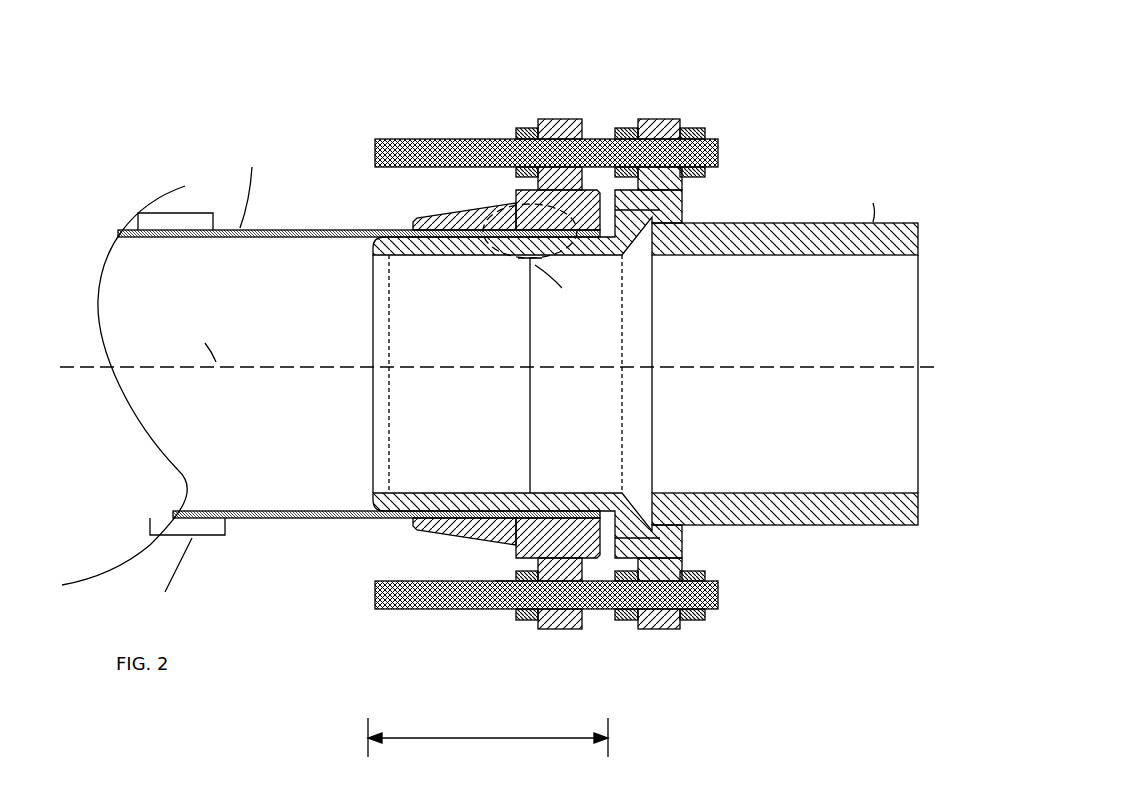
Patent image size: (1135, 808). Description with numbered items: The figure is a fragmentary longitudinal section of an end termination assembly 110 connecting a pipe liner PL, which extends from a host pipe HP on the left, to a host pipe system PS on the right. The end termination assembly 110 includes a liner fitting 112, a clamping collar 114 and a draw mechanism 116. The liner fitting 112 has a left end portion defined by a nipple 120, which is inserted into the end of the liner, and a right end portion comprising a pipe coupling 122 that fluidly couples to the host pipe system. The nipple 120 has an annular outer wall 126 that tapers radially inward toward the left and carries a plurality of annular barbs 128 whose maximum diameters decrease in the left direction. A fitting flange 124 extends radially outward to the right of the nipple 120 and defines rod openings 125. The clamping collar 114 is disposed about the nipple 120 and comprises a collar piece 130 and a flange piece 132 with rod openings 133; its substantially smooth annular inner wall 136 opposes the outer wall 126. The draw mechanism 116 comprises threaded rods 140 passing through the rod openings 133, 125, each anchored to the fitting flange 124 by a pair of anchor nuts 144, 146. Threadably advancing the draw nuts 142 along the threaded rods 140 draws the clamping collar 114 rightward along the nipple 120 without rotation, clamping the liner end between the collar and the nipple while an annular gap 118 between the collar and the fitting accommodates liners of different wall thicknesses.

The end termination assembly 110 is at (497, 396).
The liner fitting 112 is at (598, 402).
The clamping collar 114 is at (400, 214).
The draw mechanism 116 is at (512, 378).
The annular gap 118 is at (503, 585).
The nipple 120 is at (373, 500).
The pipe coupling 122 is at (665, 225).
The fitting flange 124 is at (668, 118).
The rod opening 125 is at (665, 172).
The annular outer wall 126 is at (412, 218).
The annular barb 128 is at (432, 520).
The collar piece 130 is at (467, 212).
The flange piece 132 is at (560, 325).
The rod opening 133 is at (591, 137).
The annular inner wall 136 is at (488, 523).
The threaded rod 140 is at (375, 147).
The draw nut 142 is at (527, 128).
The anchor nut 144 is at (626, 128).
The anchor nut 146 is at (705, 130).